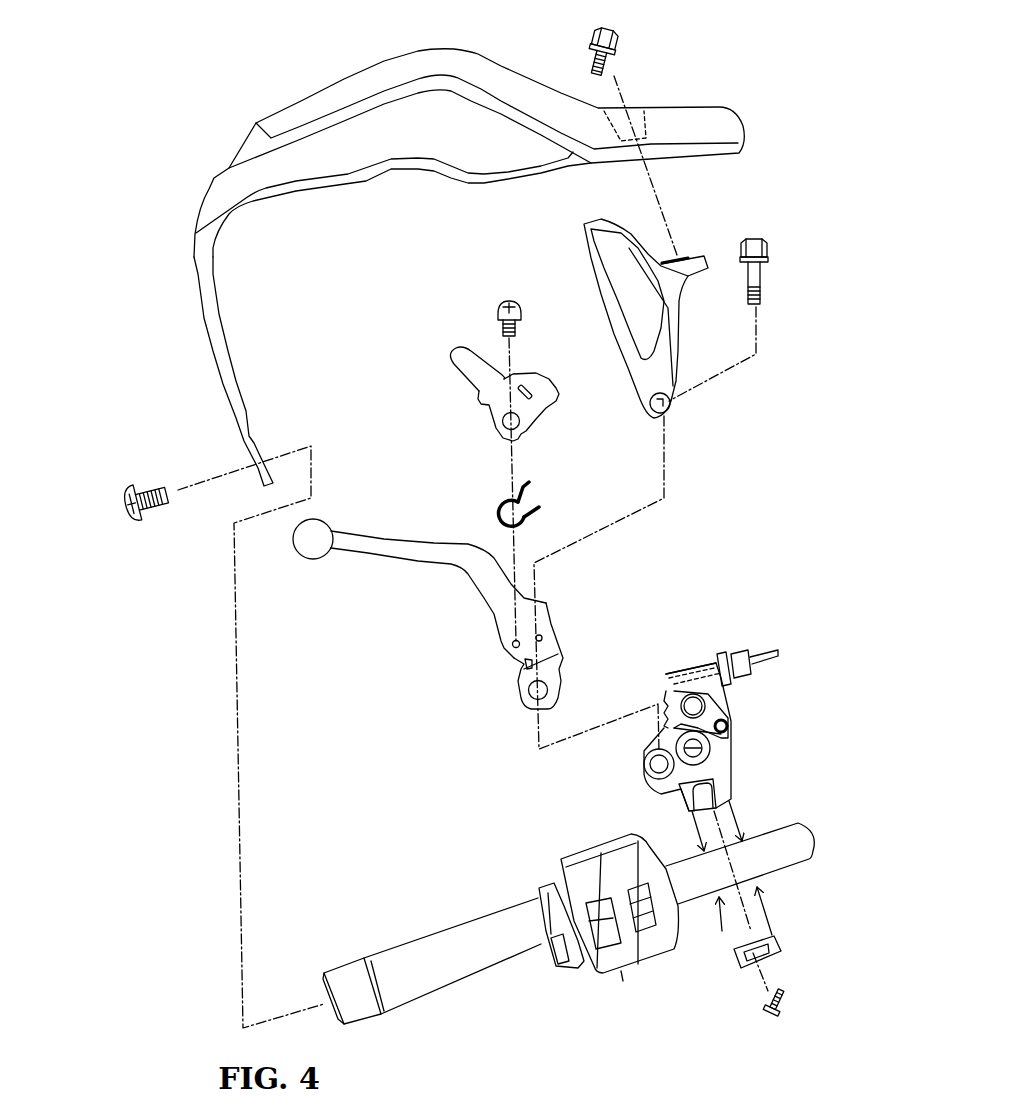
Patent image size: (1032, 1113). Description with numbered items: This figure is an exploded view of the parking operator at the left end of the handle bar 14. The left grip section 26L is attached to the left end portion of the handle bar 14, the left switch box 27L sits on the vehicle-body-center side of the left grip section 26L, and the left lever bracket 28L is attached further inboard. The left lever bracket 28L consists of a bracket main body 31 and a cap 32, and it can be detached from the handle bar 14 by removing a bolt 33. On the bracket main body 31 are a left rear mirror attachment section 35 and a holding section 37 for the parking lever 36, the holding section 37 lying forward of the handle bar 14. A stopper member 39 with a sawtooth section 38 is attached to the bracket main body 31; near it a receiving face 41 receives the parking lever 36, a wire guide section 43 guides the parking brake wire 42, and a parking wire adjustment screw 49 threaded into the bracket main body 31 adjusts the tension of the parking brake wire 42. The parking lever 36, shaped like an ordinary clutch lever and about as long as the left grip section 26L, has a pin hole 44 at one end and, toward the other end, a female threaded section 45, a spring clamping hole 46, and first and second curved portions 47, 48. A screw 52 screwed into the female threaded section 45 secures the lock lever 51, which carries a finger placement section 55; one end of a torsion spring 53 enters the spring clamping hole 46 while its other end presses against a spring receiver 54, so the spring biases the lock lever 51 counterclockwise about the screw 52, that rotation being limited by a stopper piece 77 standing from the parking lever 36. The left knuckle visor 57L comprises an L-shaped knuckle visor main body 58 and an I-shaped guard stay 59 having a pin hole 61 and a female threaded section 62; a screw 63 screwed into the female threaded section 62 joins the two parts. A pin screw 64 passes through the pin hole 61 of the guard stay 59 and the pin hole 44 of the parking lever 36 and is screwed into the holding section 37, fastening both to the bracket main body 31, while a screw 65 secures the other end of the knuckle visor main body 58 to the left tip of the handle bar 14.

The handle bar 14 is at (785, 863).
The left grip section 26L is at (480, 967).
The left switch box 27L is at (623, 967).
The left lever bracket 28L is at (730, 970).
The bracket main body 31 is at (725, 760).
The cap 32 is at (782, 950).
The bolt 33 is at (787, 1007).
The left rear mirror attachment section 35 is at (698, 748).
The parking lever 36 is at (378, 582).
The holding section 37 is at (655, 758).
The sawtooth section 38 is at (667, 697).
The stopper member 39 is at (725, 712).
The receiving face 41 is at (665, 675).
The parking brake wire 42 is at (750, 652).
The wire guide section 43 is at (683, 677).
The pin hole 44 is at (533, 703).
The female threaded section 45 is at (513, 645).
The spring clamping hole 46 is at (545, 633).
The first curved portion 47 is at (440, 565).
The second curved portion 48 is at (390, 537).
The parking wire adjustment screw 49 is at (731, 655).
The lock lever 51 is at (485, 410).
The screw 52 is at (500, 310).
The torsion spring 53 is at (503, 505).
The spring receiver 54 is at (530, 405).
The finger placement section 55 is at (462, 368).
The left knuckle visor 57L is at (517, 67).
The knuckle visor main body 58 is at (352, 88).
The guard stay 59 is at (622, 285).
The pin hole 61 is at (673, 403).
The female threaded section 62 is at (680, 256).
The screw 63 is at (613, 33).
The pin screw 64 is at (767, 262).
The screw 65 is at (137, 525).
The stopper piece 77 is at (520, 665).